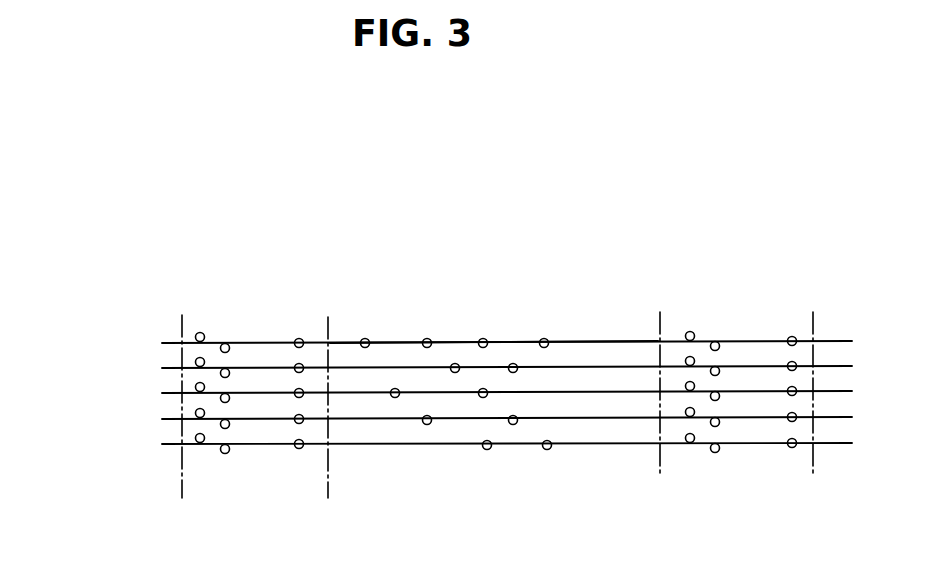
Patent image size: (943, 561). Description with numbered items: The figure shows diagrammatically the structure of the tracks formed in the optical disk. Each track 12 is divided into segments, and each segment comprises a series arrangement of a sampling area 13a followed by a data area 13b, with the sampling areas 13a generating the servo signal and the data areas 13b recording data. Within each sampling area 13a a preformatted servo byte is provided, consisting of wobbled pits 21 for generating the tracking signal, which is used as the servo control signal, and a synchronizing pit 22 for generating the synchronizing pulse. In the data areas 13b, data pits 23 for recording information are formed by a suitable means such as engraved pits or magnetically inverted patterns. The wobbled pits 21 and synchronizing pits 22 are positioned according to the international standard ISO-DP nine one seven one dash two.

The track 12 is at (162, 368).
The sampling area 13a is at (273, 247).
The data area 13b is at (525, 247).
The wobbled pits 21 is at (200, 332).
The synchronizing pit 22 is at (300, 338).
The data pits 23 is at (542, 340).